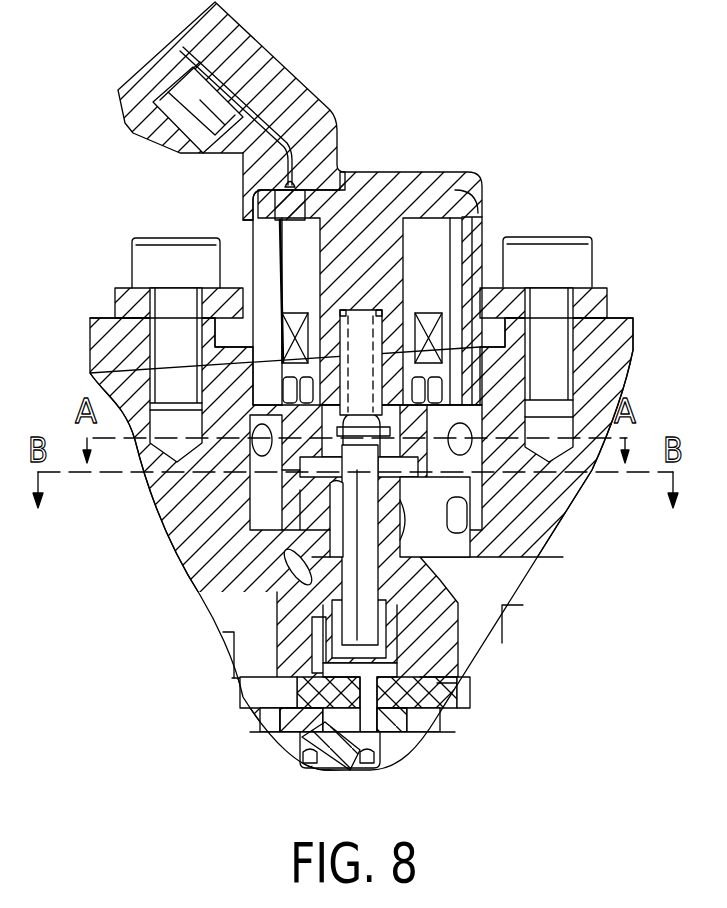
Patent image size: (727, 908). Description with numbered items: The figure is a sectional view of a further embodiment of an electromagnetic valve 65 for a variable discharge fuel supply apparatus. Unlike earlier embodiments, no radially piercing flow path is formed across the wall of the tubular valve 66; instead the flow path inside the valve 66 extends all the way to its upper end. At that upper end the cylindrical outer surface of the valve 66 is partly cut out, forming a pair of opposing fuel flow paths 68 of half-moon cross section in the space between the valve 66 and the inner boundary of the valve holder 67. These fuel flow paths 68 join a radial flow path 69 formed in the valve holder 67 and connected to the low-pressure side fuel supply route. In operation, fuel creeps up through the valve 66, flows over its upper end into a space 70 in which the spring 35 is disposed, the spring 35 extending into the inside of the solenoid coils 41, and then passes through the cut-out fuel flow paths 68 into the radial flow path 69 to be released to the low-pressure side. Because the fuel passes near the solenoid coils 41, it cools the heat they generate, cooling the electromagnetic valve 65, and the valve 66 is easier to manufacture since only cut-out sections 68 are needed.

The electromagnetic valve 65 is at (450, 170).
The space 70 is at (363, 308).
The spring 35 is at (348, 298).
The solenoid coils 41 is at (435, 325).
The tubular valve 66 is at (463, 525).
The valve holder 67 is at (380, 573).
The fuel flow paths 68 is at (380, 440).
The radial flow path 69 is at (380, 500).